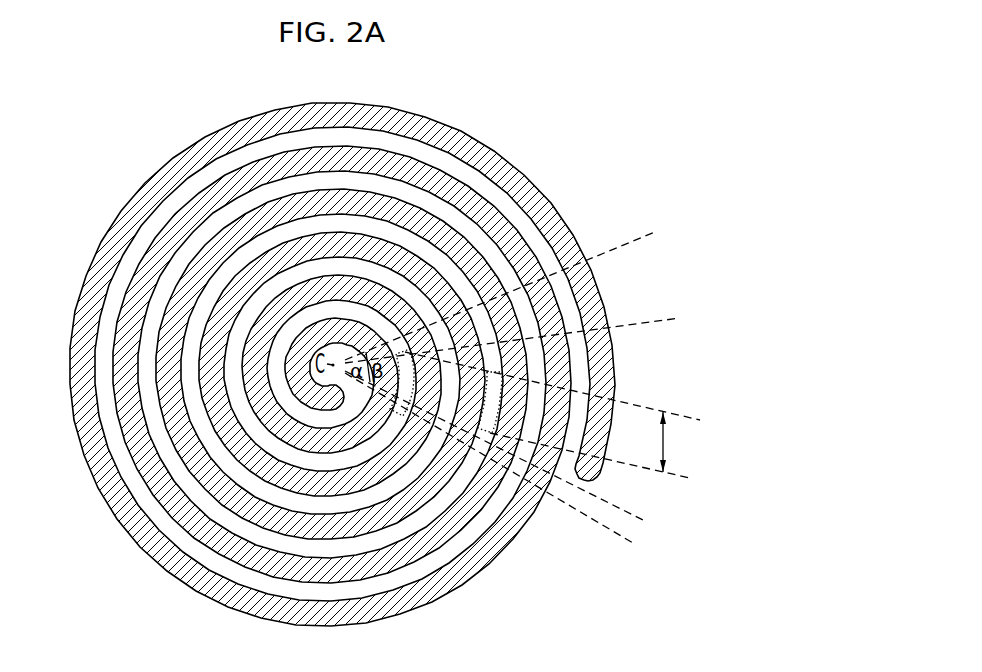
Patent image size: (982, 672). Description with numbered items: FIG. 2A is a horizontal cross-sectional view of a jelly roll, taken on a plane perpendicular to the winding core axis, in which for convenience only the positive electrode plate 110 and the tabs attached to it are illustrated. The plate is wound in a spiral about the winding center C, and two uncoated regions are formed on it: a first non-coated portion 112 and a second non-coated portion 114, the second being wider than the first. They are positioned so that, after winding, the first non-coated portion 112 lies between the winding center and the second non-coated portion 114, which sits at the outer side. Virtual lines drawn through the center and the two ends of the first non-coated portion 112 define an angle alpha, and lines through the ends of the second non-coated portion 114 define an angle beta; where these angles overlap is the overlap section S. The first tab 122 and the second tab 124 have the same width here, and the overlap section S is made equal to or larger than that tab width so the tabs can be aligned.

The positive electrode plate 110 is at (568, 137).
The first non-coated portion 112 is at (500, 425).
The second non-coated portion 114 is at (493, 432).
The first tab 122 is at (412, 352).
The second tab 124 is at (500, 373).